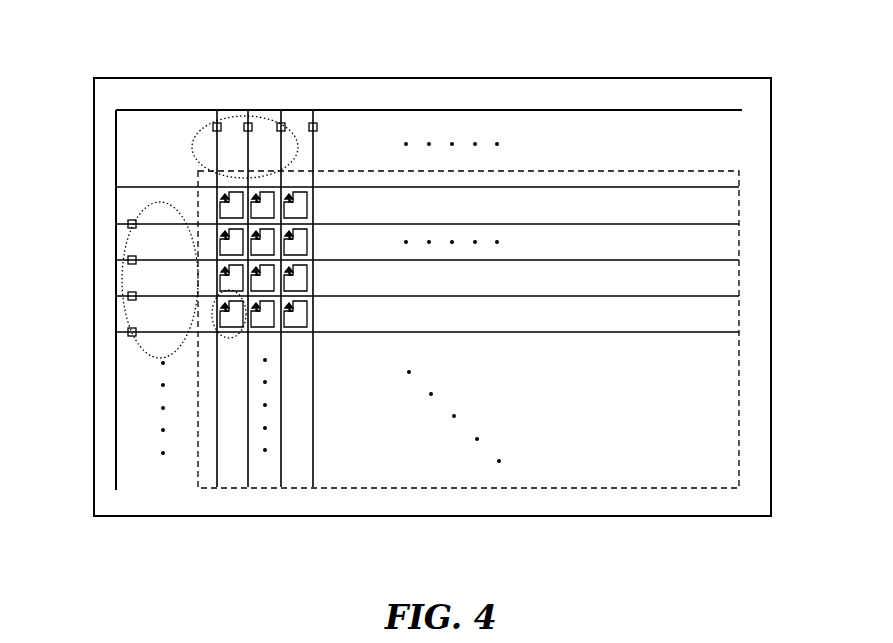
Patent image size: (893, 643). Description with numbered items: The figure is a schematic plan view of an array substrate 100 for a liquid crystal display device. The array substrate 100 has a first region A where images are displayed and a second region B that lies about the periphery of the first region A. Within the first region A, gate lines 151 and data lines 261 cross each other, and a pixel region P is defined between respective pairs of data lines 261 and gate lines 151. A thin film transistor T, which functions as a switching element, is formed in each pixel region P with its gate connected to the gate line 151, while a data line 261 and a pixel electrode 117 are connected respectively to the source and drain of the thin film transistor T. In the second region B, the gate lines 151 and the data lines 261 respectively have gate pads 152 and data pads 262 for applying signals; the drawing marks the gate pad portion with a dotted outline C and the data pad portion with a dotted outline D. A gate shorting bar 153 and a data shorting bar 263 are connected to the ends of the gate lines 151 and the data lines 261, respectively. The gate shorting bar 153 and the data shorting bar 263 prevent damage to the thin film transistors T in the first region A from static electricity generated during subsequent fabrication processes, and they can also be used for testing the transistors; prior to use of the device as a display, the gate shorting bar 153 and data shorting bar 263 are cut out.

The array substrate 100 is at (770, 160).
The pixel electrode 117 is at (297, 210).
The gate line 151 is at (557, 187).
The gate pad 152 is at (128, 224).
The gate shorting bar 153 is at (116, 370).
The data line 261 is at (217, 465).
The data pad 262 is at (213, 123).
The data shorting bar 263 is at (348, 109).
The thin film transistor T is at (290, 183).
The first region A is at (702, 440).
The second region B is at (760, 302).
The gate pad area C is at (120, 234).
The data pad area D is at (193, 145).
The pixel region P is at (227, 335).